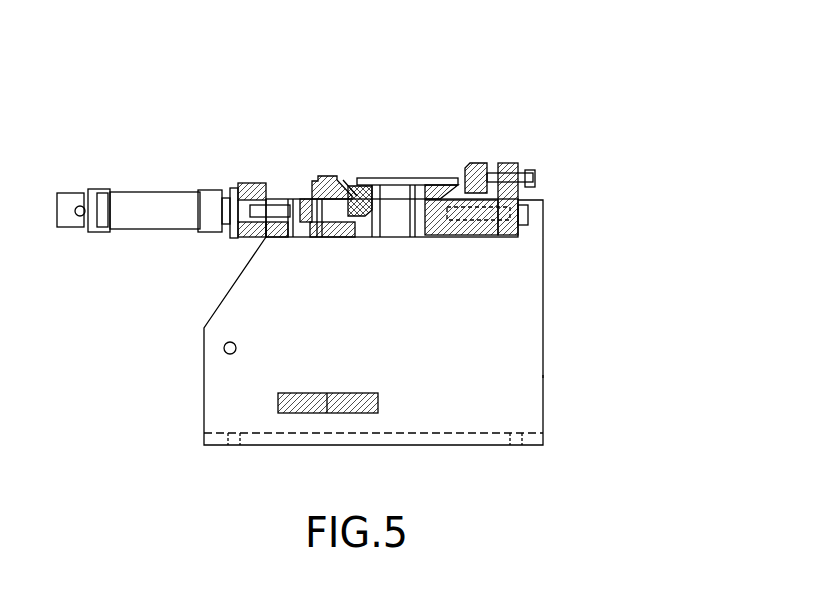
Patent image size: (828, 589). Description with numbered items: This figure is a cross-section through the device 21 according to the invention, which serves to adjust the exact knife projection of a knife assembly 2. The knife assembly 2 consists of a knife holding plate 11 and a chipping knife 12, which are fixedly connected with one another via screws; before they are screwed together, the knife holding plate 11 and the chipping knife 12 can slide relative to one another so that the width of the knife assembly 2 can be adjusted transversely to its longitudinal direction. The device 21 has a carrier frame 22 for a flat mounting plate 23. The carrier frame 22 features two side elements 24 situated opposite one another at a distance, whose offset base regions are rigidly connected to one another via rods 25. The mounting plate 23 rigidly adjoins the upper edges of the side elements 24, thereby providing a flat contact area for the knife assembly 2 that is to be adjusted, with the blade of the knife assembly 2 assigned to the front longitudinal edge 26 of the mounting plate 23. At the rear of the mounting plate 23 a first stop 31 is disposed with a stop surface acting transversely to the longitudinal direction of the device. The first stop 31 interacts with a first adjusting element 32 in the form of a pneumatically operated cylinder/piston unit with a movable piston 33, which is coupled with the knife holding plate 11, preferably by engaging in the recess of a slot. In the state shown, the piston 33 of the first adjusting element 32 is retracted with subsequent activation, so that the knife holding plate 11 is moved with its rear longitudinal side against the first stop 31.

The knife assembly 2 is at (403, 172).
The knife holding plate 11 is at (343, 183).
The chipping knife 12 is at (435, 183).
The device 21 is at (578, 135).
The carrier frame 22 is at (545, 310).
The mounting plate 23 is at (452, 228).
The side element 24 is at (543, 375).
The rod 25 is at (330, 413).
The front longitudinal edge 26 is at (490, 222).
The first stop 31 is at (300, 197).
The first adjusting element 32 is at (143, 190).
The piston 33 is at (300, 199).